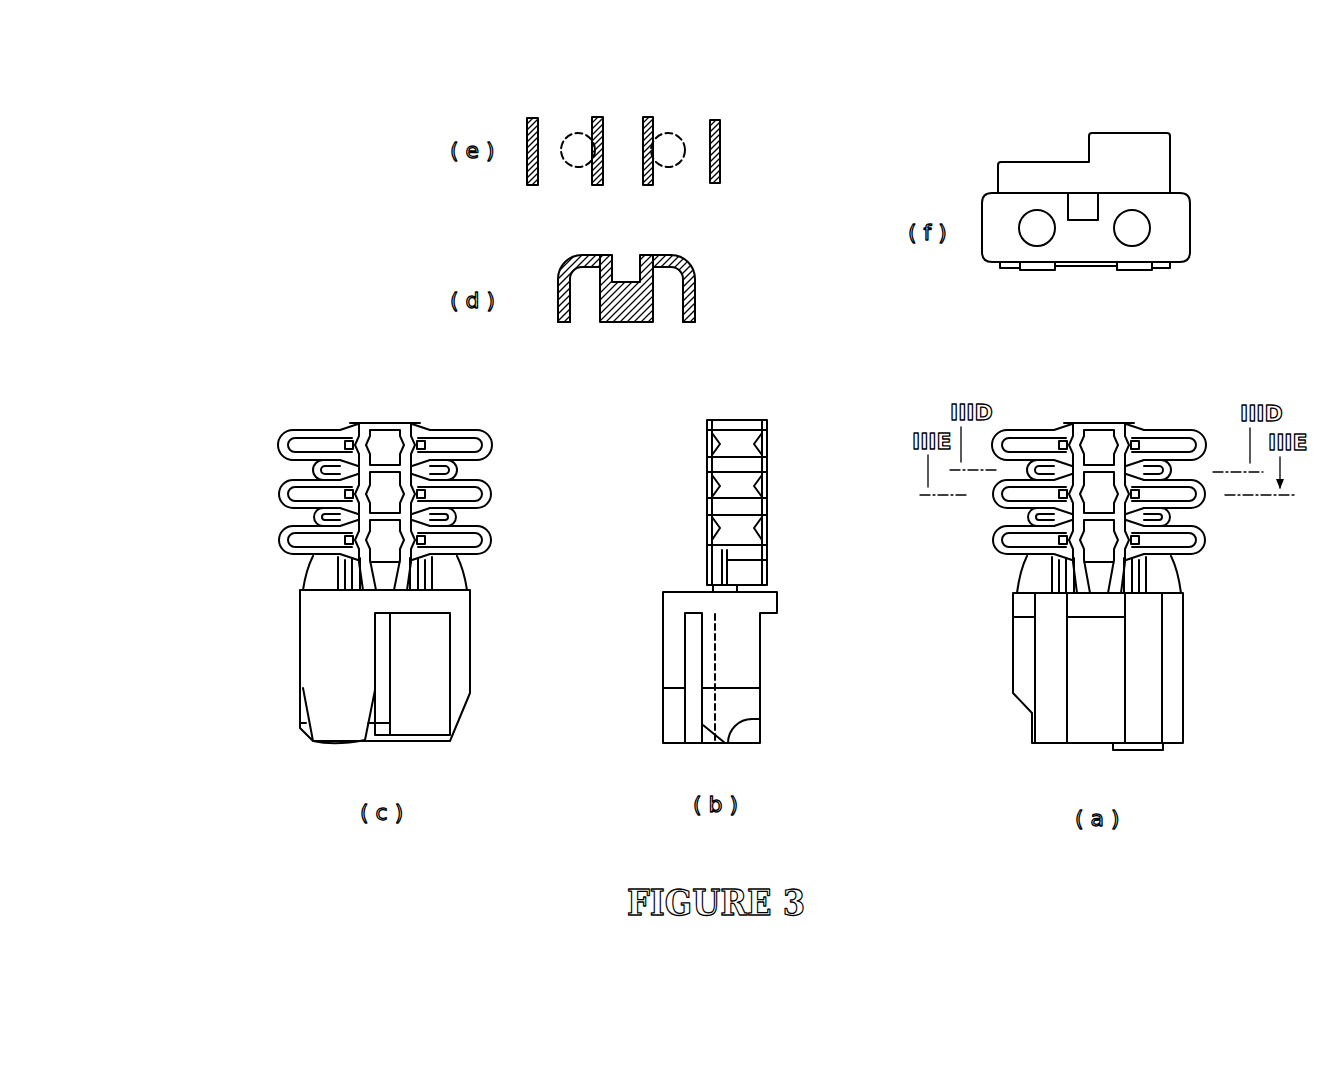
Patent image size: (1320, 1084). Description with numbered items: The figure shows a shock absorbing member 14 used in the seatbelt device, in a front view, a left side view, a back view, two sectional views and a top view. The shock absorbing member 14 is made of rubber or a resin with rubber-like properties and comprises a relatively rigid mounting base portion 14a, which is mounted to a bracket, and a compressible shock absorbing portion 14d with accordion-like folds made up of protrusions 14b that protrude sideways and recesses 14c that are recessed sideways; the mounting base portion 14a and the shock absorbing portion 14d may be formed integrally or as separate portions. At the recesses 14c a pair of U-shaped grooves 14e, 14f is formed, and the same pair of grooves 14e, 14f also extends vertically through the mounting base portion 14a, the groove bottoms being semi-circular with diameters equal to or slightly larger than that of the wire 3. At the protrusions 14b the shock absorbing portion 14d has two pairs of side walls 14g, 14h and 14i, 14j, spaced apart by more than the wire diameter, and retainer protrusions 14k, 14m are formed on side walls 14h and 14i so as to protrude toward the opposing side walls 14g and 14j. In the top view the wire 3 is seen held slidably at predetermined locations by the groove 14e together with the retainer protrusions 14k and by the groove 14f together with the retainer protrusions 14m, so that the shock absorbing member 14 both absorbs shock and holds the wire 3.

The shock absorbing member 14 is at (724, 404).
The mounting base portion 14a is at (313, 670).
The protrusions 14b is at (752, 333).
The recesses 14c is at (307, 467).
The shock absorbing portion 14d is at (724, 366).
The U-shaped groove 14e is at (690, 303).
The U-shaped groove 14f is at (568, 321).
The side wall 14g is at (710, 122).
The side wall 14h is at (650, 117).
The side wall 14i is at (596, 117).
The side wall 14j is at (540, 118).
The retainer protrusion 14k is at (650, 182).
The retainer protrusion 14m is at (592, 182).
The wire 3 is at (565, 160).